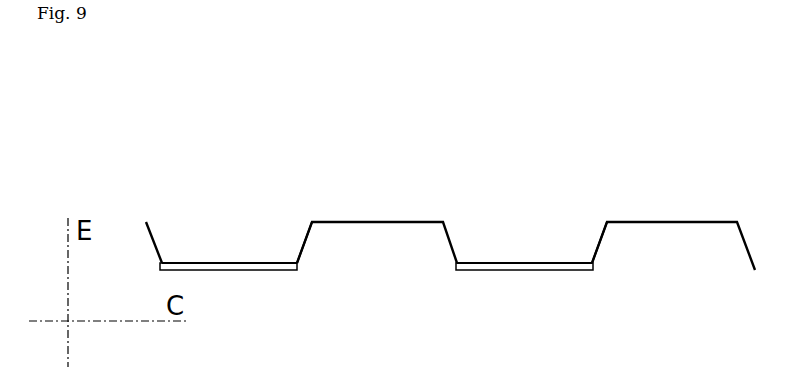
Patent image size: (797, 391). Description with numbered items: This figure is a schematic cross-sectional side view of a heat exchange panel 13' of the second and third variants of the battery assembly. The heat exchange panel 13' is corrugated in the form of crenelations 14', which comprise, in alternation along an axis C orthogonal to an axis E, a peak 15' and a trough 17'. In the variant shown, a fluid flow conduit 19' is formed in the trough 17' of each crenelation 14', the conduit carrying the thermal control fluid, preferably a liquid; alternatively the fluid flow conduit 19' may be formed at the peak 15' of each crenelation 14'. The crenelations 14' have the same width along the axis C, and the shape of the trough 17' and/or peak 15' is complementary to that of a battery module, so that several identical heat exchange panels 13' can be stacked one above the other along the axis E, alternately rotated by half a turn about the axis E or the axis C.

The heat exchange panel 13' is at (450, 169).
The crenelation 14' is at (482, 167).
The peak 15' is at (524, 179).
The trough 17' is at (391, 204).
The fluid flow conduit 19' is at (398, 304).